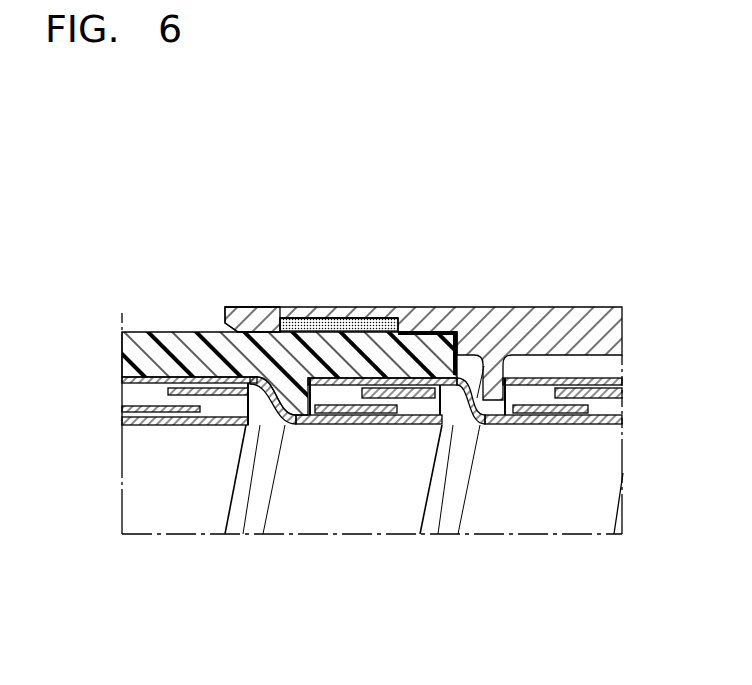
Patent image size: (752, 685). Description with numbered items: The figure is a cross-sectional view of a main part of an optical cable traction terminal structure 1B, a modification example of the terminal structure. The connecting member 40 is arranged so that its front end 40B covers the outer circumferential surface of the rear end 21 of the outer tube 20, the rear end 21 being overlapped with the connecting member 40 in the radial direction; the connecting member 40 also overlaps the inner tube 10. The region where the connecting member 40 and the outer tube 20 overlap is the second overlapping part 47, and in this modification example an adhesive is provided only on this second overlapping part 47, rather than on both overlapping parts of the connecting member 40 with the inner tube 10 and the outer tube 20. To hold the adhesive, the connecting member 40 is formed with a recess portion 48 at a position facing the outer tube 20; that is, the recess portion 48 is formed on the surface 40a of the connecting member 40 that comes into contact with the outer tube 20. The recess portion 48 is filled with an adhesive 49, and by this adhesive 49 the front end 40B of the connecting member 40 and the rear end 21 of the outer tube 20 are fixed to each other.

The optical cable traction terminal structure 1B is at (539, 180).
The inner tube 10 is at (532, 510).
The outer tube 20 is at (155, 332).
The rear end 21 is at (423, 333).
The connecting member 40 is at (578, 298).
The surface 40a is at (253, 340).
The front end 40B is at (270, 300).
The second overlapping part 47 is at (244, 297).
The recess portion 48 is at (388, 322).
The adhesive 49 is at (348, 320).